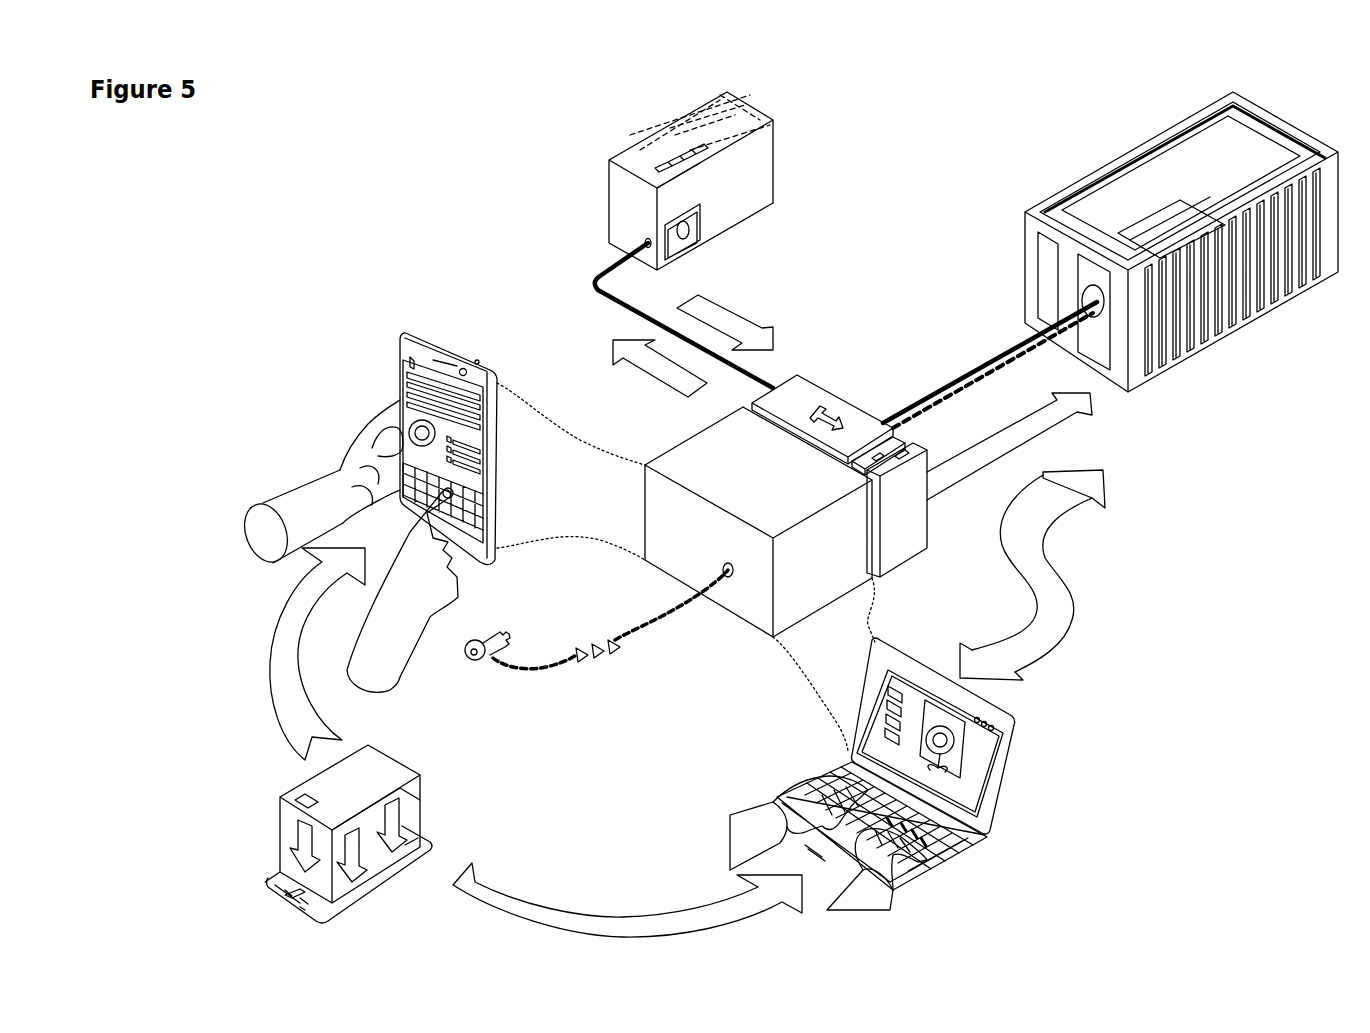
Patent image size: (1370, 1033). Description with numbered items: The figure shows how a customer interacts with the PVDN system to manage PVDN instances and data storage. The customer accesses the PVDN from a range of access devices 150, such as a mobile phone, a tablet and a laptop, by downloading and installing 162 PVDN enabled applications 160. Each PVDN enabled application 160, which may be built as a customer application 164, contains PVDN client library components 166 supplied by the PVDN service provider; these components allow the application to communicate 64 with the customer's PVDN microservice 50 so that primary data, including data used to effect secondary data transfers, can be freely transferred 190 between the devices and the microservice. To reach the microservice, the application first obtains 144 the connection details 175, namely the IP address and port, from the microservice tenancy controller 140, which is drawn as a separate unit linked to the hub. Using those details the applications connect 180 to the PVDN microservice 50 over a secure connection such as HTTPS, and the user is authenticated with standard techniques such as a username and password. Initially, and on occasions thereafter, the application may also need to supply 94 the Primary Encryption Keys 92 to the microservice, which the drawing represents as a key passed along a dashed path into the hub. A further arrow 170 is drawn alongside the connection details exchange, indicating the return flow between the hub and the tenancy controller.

The PVDN microservice 50 is at (1272, 120).
The communication 64 is at (997, 352).
The Primary Encryption Keys 92 is at (493, 658).
The supplying of Primary Encryption Keys 94 is at (953, 398).
The microservice tenancy controller 140 is at (720, 115).
The obtaining of connection details 144 is at (588, 280).
The PVDN enabled device 150 is at (418, 345).
The PVDN enabled application program 160 is at (395, 400).
The downloading and installing 162 is at (393, 820).
The customer application 164 is at (702, 465).
The PVDN client library components 166 is at (790, 393).
The data flow arrow 170 is at (623, 347).
The connection details 175 is at (708, 313).
The connection to the PVDN microservice 180 is at (1058, 412).
The transfer of primary data 190 is at (1047, 607).